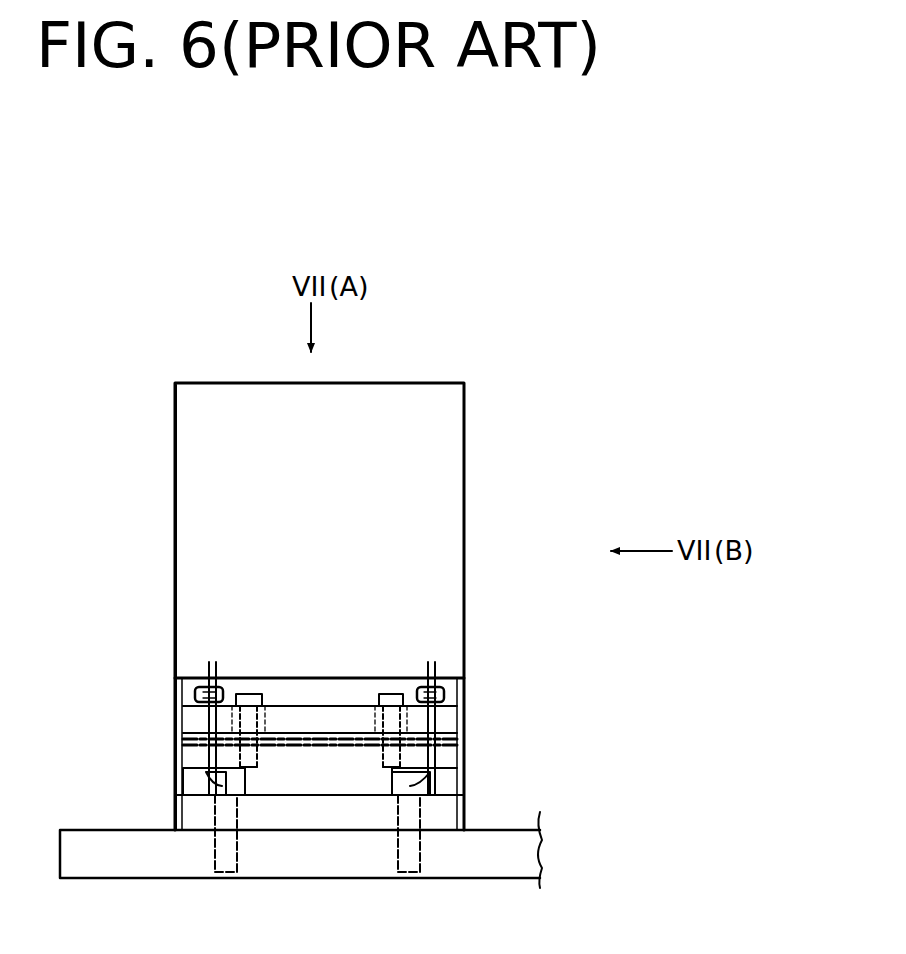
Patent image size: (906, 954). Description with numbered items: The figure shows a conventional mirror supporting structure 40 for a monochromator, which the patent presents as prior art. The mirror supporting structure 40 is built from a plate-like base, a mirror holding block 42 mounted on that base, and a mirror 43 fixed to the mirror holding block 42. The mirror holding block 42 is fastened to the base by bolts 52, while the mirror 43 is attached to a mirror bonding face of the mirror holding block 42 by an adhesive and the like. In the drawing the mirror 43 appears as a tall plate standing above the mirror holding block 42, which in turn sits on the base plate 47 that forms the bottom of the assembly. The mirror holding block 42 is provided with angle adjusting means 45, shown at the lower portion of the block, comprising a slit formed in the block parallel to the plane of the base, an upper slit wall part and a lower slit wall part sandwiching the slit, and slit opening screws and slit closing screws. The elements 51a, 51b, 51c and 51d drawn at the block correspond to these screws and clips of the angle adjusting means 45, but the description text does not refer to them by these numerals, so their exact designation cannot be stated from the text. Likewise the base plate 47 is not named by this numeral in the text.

The mirror supporting structure 40 is at (476, 203).
The mirror 43 is at (463, 468).
The angle adjusting means 45 is at (310, 650).
The mirror holding block 42 is at (458, 700).
The clip 51a is at (432, 684).
The clip 51b is at (207, 684).
The bolt 51c is at (458, 728).
The bolt 51d is at (235, 718).
The bolts 52 is at (215, 778).
The base plate 47 is at (147, 857).